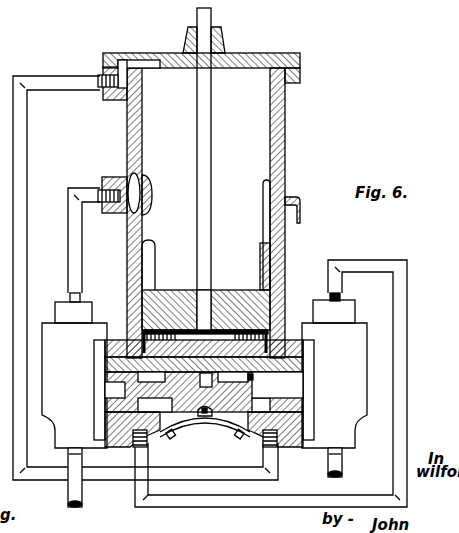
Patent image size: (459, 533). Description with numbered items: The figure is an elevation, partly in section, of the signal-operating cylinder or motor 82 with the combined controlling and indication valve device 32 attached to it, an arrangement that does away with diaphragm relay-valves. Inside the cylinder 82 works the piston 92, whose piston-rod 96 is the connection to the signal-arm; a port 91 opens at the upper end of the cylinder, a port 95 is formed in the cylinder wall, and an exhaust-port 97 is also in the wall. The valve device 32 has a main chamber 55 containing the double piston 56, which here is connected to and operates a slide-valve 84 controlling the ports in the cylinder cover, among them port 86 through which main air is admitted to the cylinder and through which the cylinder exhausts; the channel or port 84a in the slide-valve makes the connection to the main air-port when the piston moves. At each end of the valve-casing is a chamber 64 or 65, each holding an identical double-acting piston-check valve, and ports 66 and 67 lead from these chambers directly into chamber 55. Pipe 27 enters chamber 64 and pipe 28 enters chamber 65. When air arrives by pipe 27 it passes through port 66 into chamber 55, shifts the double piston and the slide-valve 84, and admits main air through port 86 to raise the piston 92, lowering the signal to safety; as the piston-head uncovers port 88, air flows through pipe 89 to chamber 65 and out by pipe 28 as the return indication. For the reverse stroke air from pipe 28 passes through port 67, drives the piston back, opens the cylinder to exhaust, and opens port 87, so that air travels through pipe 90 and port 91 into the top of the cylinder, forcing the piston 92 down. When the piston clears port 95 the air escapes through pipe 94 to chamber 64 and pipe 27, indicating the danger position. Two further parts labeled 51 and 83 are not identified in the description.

The pipe 27 is at (68, 492).
The pipe 28 is at (342, 471).
The combined controlling and indication valve device 32 is at (117, 343).
The port 51 is at (117, 391).
The chamber 55 is at (148, 403).
The double piston 56 is at (275, 385).
The chamber 64 is at (105, 391).
The chamber 65 is at (333, 368).
The port 66 is at (105, 385).
The port 67 is at (312, 390).
The signal-operating cylinder 82 is at (285, 262).
The plate 83 is at (173, 352).
The slide-valve 84 is at (238, 432).
The channel or port 84a is at (198, 378).
The port 86 is at (238, 352).
The port 87 is at (278, 440).
The port 88 is at (134, 440).
The pipe 89 is at (367, 266).
The pipe 90 is at (20, 186).
The port 91 is at (123, 66).
The piston 92 is at (222, 292).
The pipe 94 is at (82, 251).
The port 95 is at (128, 176).
The piston-rod 96 is at (211, 100).
The exhaust-port 97 is at (297, 224).